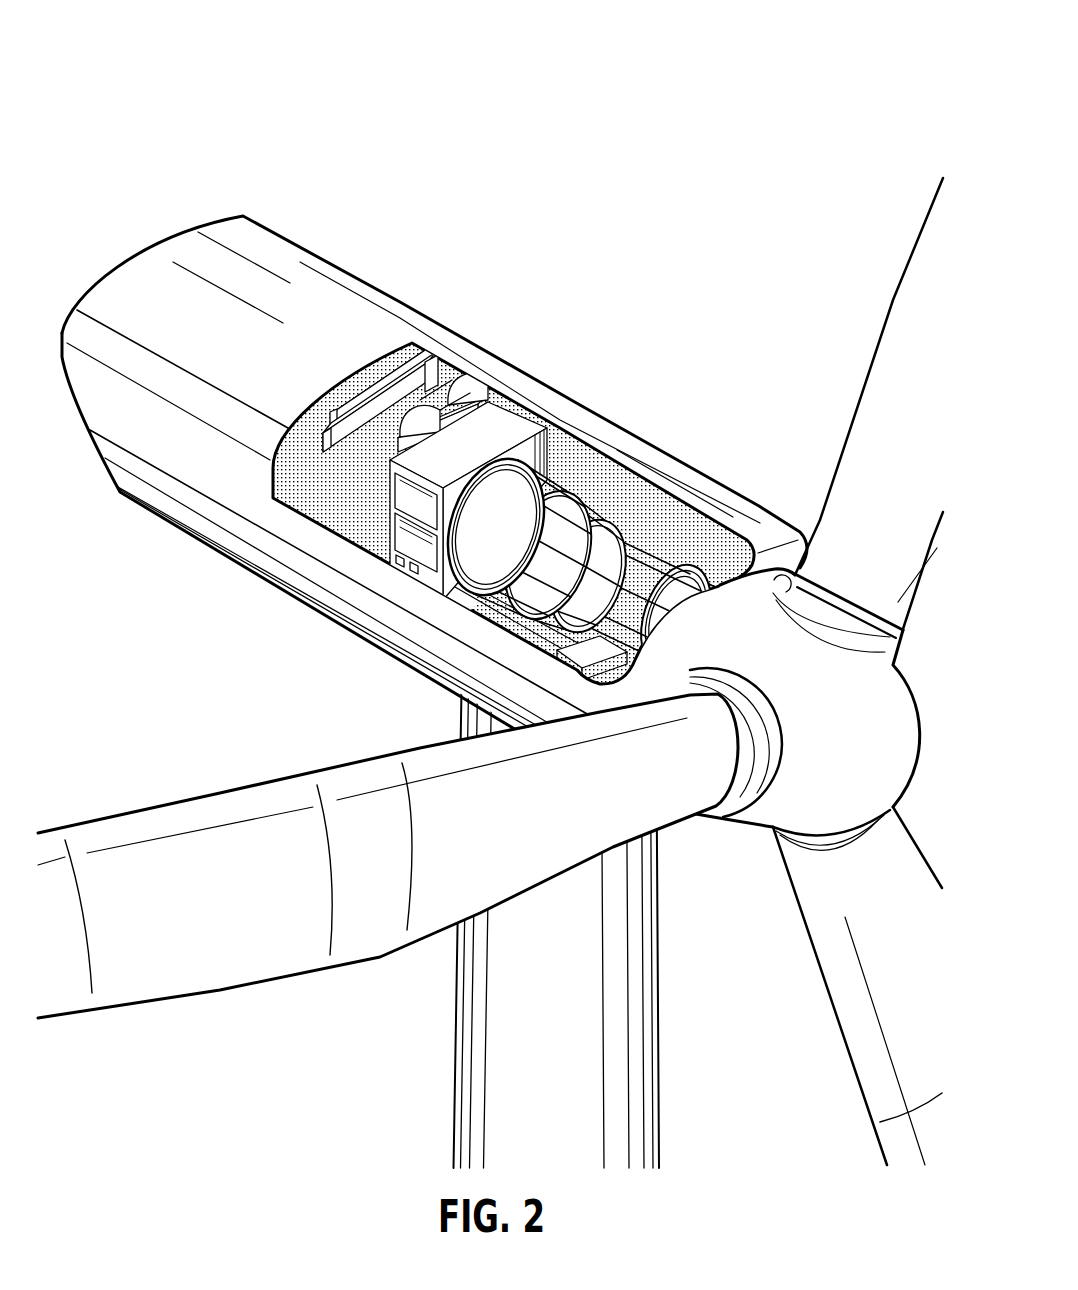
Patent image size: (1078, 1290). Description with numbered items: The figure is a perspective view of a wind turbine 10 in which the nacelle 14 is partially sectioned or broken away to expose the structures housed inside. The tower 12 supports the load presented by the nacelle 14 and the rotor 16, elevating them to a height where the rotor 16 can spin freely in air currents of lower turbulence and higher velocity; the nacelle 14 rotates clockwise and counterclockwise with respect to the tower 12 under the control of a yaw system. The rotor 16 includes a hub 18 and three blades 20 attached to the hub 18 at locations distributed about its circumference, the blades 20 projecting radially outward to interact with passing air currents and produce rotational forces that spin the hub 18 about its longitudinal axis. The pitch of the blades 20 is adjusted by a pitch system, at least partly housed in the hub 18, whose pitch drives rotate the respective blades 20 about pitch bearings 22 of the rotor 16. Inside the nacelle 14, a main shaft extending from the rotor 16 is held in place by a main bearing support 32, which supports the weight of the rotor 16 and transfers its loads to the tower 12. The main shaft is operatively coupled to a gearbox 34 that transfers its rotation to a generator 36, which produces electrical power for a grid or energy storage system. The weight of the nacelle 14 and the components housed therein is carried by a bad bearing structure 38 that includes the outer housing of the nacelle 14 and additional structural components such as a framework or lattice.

The wind turbine 10 is at (181, 71).
The tower 12 is at (657, 983).
The nacelle 14 is at (341, 263).
The rotor 16 is at (918, 700).
The hub 18 is at (910, 773).
The blades 20 is at (893, 329).
The pitch bearings 22 is at (828, 594).
The main bearing support 32 is at (660, 556).
The gearbox 34 is at (590, 503).
The generator 36 is at (537, 457).
The bad bearing structure 38 is at (493, 618).